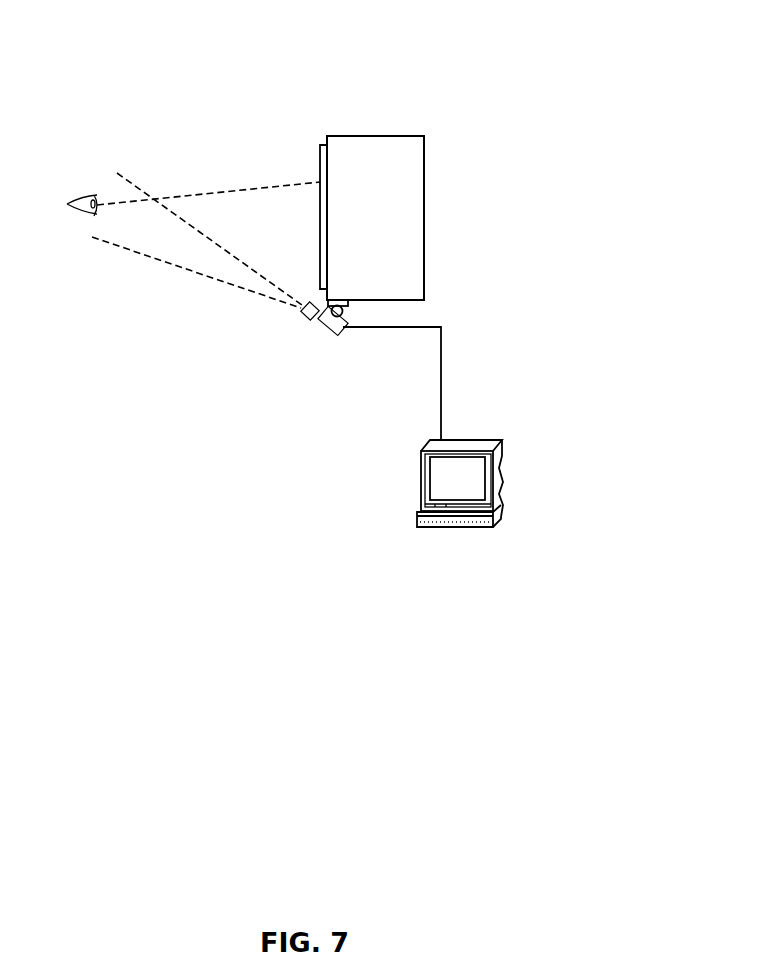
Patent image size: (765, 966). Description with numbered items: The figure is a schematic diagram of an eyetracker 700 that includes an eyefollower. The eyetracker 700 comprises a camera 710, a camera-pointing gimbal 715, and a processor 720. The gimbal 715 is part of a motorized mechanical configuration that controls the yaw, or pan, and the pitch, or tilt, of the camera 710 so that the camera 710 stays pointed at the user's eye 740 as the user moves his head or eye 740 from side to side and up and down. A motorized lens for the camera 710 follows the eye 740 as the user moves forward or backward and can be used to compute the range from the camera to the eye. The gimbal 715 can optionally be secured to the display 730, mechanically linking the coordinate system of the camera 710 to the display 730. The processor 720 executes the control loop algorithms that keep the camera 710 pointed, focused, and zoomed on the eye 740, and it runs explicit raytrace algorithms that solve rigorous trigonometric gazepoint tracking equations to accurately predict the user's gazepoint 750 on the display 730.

The eyetracker 700 is at (321, 527).
The camera 710 is at (322, 330).
The camera-pointing gimbal 715 is at (345, 310).
The processor 720 is at (502, 457).
The display 730 is at (322, 146).
The user's eye 740 is at (97, 197).
The gazepoint 750 is at (247, 187).